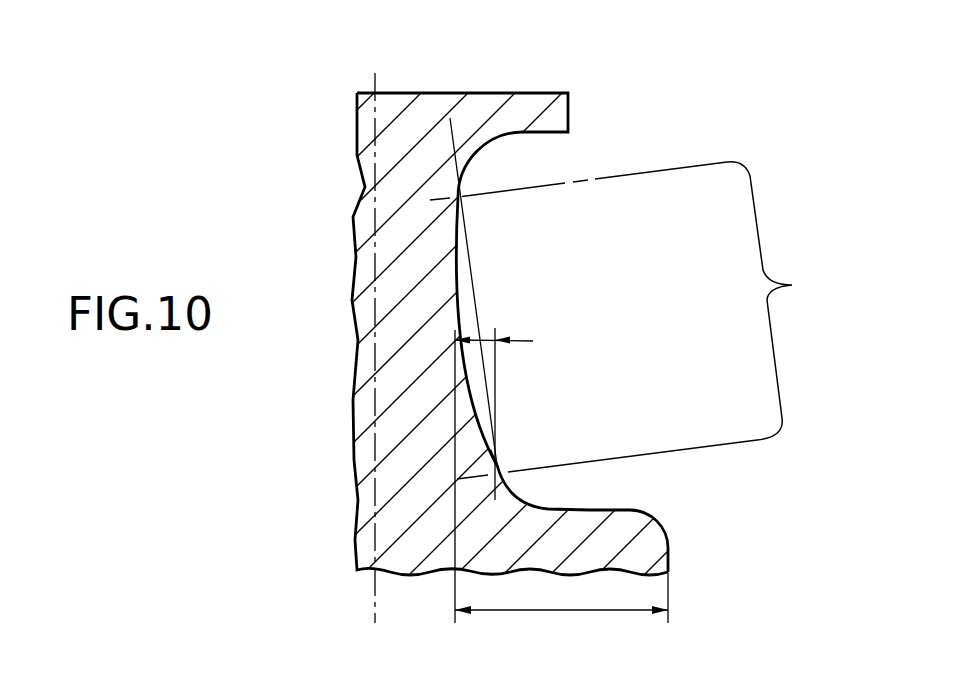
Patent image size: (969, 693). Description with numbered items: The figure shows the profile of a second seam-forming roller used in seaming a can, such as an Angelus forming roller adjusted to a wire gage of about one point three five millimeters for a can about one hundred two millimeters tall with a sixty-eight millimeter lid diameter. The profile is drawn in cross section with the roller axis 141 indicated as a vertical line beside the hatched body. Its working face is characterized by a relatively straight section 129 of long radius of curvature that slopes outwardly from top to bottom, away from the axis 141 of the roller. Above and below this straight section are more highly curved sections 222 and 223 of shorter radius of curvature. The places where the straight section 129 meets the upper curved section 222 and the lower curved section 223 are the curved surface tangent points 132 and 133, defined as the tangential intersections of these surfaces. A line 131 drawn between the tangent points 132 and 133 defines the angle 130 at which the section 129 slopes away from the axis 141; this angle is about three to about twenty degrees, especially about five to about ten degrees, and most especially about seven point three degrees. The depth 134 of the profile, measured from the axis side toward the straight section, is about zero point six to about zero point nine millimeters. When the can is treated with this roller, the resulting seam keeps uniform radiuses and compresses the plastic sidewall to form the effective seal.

The section 129 is at (633, 320).
The angle 130 is at (484, 337).
The line 131 is at (507, 93).
The tangent point 132 is at (460, 198).
The tangent point 133 is at (497, 467).
The depth 134 is at (567, 612).
The axis 141 is at (377, 581).
The curved section 222 is at (483, 148).
The curved section 223 is at (588, 505).